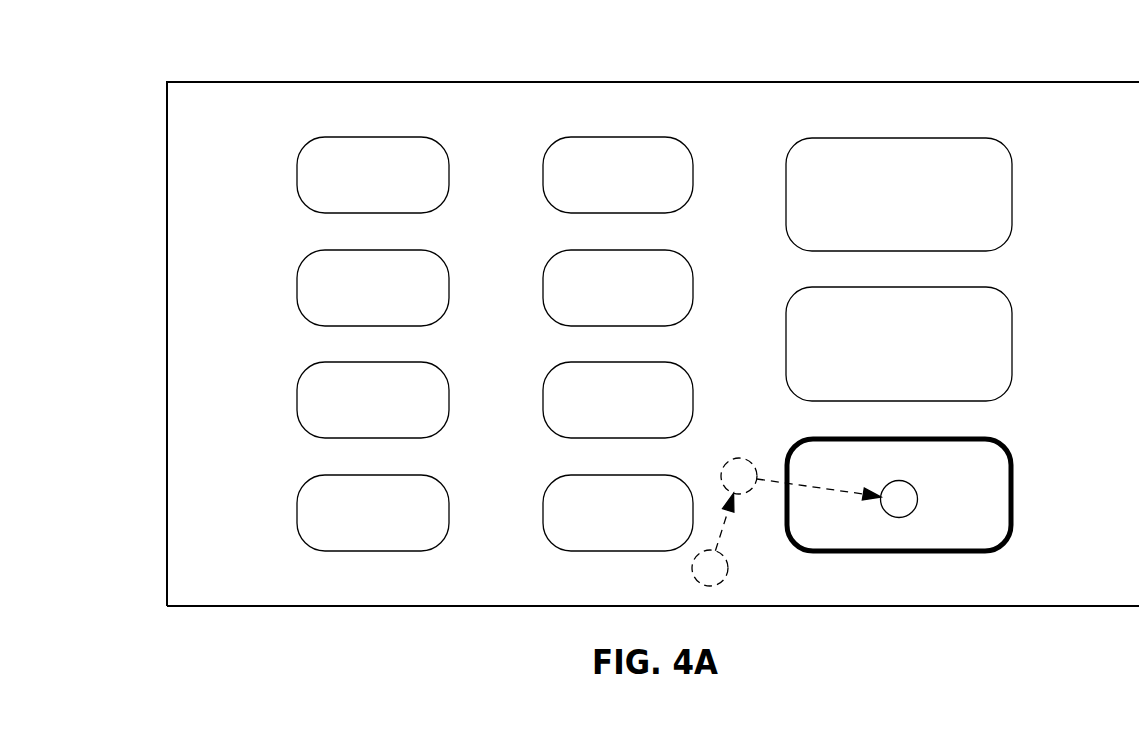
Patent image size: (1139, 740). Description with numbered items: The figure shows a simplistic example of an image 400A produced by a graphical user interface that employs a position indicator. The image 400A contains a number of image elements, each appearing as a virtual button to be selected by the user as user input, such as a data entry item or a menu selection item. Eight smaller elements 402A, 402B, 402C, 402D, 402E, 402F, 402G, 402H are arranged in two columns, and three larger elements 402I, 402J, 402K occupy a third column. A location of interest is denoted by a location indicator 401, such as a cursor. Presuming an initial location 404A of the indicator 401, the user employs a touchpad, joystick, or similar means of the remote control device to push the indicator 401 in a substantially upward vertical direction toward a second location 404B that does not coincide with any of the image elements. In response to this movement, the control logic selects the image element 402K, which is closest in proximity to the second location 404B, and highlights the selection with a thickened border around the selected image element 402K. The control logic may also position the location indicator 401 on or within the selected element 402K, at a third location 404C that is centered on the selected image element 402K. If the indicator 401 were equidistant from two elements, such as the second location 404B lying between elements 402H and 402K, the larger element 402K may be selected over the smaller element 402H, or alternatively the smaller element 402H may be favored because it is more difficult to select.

The image 400A is at (1030, 82).
The image element 402A is at (365, 172).
The image element 402B is at (365, 285).
The image element 402C is at (365, 397).
The image element 402D is at (367, 510).
The image element 402E is at (609, 172).
The image element 402F is at (608, 285).
The image element 402G is at (612, 397).
The image element 402H is at (611, 510).
The image element 402I is at (845, 173).
The image element 402J is at (845, 322).
The selected image element 402K is at (852, 472).
The location indicator 401 is at (897, 478).
The initial location 404A is at (727, 562).
The second location 404B is at (748, 458).
The third location 404C is at (937, 513).